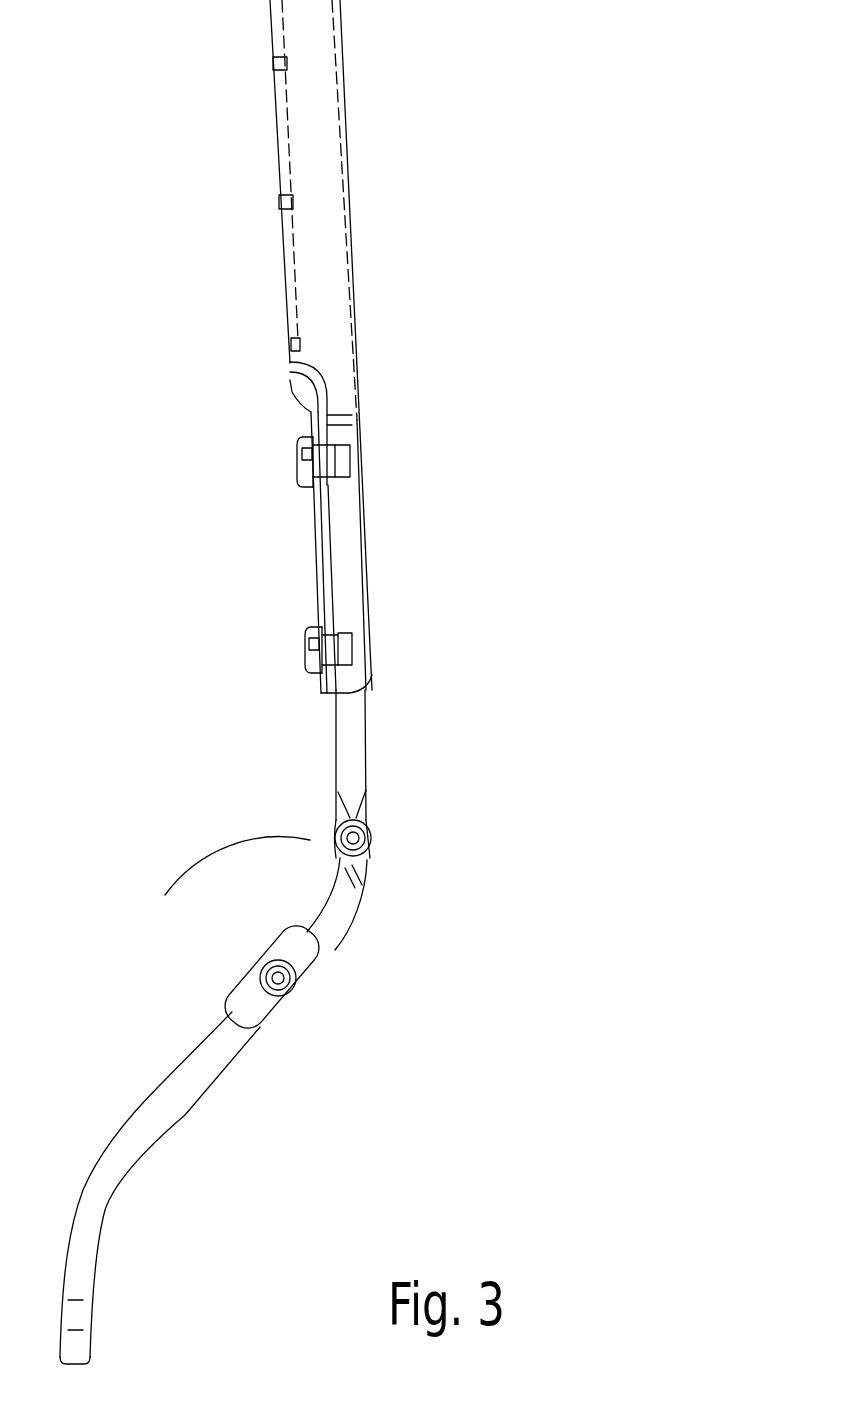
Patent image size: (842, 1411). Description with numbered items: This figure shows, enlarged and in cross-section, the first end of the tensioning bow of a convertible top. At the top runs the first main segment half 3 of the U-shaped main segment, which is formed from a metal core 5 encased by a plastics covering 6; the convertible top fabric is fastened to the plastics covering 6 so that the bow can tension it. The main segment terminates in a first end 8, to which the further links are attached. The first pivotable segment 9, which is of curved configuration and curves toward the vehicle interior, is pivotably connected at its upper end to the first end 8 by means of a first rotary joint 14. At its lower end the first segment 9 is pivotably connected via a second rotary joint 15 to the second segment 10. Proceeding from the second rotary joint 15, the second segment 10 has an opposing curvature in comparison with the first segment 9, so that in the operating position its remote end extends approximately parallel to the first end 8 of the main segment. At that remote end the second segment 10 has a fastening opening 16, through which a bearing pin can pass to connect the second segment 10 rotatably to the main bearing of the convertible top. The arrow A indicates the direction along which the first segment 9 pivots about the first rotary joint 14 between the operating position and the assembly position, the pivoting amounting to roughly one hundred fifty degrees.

The first main segment half 3 is at (393, 345).
The metal core 5 is at (327, 258).
The plastics covering 6 is at (345, 180).
The first end 8 is at (349, 708).
The first pivotable segment 9 is at (317, 933).
The second segment 10 is at (185, 1080).
The first rotary joint 14 is at (373, 842).
The second rotary joint 15 is at (293, 1003).
The fastening opening 16 is at (75, 1315).
The arrow A is at (232, 855).